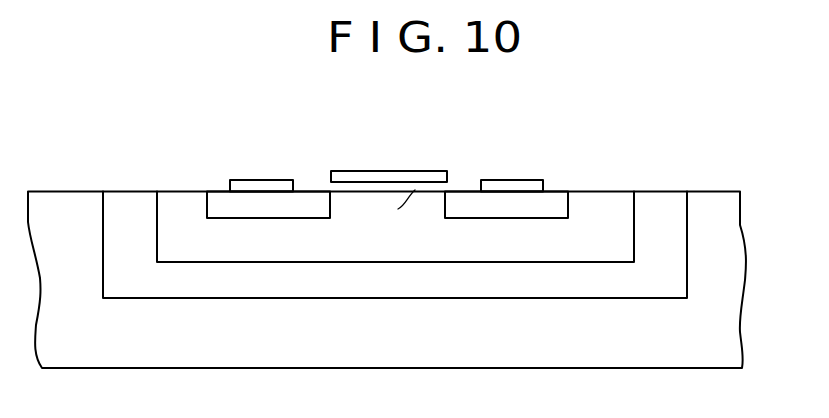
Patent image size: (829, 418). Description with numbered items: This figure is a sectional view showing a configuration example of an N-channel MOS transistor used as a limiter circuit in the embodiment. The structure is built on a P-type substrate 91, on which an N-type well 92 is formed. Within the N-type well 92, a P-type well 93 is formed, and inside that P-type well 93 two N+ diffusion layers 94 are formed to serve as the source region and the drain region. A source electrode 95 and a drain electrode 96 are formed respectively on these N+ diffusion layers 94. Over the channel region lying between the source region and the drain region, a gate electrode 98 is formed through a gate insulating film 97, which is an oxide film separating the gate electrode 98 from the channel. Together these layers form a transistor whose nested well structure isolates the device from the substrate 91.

The P-type substrate 91 is at (722, 342).
The N-type well 92 is at (665, 205).
The P-type well 93 is at (601, 206).
The N+ diffusion layer 94 is at (217, 198).
The source electrode 95 is at (294, 178).
The drain electrode 96 is at (540, 178).
The gate insulating film 97 is at (448, 190).
The gate electrode 98 is at (418, 169).